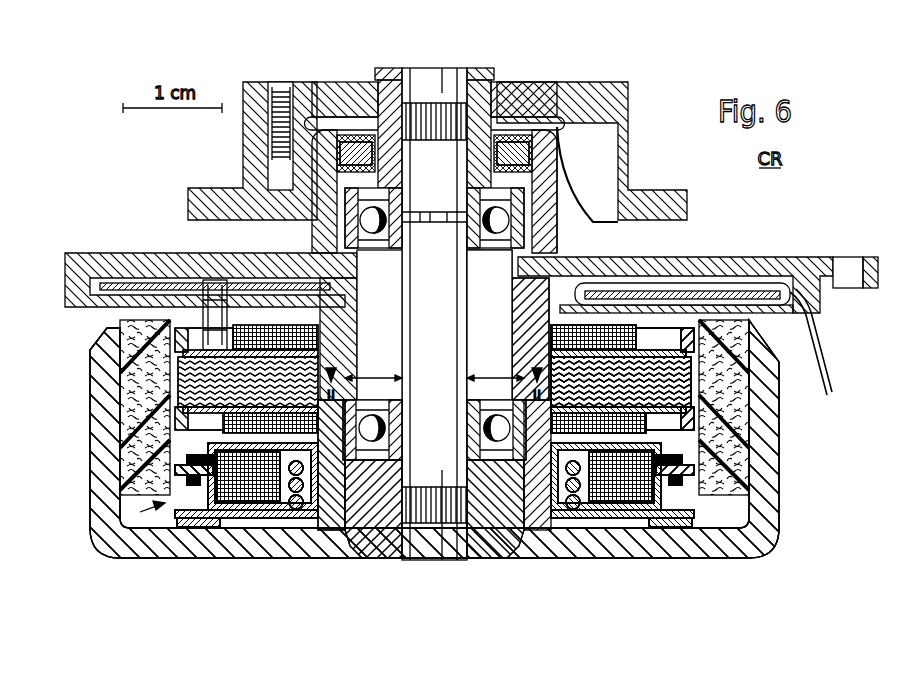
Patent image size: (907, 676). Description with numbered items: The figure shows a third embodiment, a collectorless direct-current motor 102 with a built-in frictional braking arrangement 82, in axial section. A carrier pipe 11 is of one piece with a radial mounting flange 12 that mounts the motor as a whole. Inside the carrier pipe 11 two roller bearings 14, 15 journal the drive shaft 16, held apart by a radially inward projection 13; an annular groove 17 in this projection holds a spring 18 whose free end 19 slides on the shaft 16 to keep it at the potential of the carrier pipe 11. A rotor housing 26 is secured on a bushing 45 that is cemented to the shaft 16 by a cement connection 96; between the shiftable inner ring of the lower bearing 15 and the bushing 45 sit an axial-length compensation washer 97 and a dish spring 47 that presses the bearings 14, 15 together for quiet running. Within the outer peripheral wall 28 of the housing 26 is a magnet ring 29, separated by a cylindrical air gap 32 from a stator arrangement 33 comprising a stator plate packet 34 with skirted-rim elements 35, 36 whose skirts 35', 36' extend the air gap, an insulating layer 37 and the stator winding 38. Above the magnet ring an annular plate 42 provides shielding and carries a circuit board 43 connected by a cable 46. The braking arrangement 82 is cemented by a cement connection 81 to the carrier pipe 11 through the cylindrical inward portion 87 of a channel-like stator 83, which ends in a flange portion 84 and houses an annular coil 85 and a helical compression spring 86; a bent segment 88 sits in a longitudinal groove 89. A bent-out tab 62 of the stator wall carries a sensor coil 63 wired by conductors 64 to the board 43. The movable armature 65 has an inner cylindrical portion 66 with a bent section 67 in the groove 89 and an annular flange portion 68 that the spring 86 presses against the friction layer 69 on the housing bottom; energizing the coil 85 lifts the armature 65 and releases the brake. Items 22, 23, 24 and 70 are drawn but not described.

The motor 102 is at (140, 172).
The carrier pipe 11 is at (533, 302).
The radial mounting flange 12 is at (813, 260).
The radially inward projection 13 is at (545, 262).
The upper roller bearing 14 is at (347, 232).
The lower roller bearing 15 is at (370, 403).
The drive shaft 16 is at (440, 308).
The annular groove 17 is at (520, 373).
The spring 18 is at (396, 375).
The free end 19 is at (472, 373).
The flange 22 is at (615, 107).
The rotor hub 23 is at (393, 167).
The seal ring 24 is at (537, 155).
The rotor housing 26 is at (590, 558).
The outer peripheral wall 28 is at (768, 437).
The magnet ring 29 is at (733, 465).
The air gap 32 is at (693, 448).
The stator arrangement 33 is at (177, 368).
The stator plate packet 34 is at (262, 357).
The skirted-rim element 35 is at (622, 330).
The skirt 35' is at (676, 379).
The skirted-rim element 36 is at (622, 393).
The skirt 36' is at (685, 379).
The layer of insulating material 37 is at (183, 413).
The stator winding 38 is at (330, 318).
The annular plate 42 is at (716, 290).
The circuit board 43 is at (752, 295).
The bushing 45 is at (488, 533).
The cable 46 is at (817, 347).
The dish spring 47 is at (378, 520).
The bent-out tab 62 is at (205, 472).
The sensor coil 63 is at (205, 497).
The conductors 64 is at (175, 387).
The movable armature 65 is at (700, 518).
The radially inner cylindrical portion 66 is at (293, 502).
The radially inwardly bent section 67 is at (540, 530).
The annular flange portion 68 is at (240, 525).
The annular friction layer 69 is at (197, 527).
The housing bottom 70 is at (143, 522).
The cement connection 81 is at (338, 543).
The frictional braking arrangement 82 is at (153, 505).
The channel-like stator 83 is at (207, 438).
The flange portion 84 is at (693, 497).
The annular coil 85 is at (635, 497).
The helical compression spring 86 is at (580, 510).
The cylindrical radially inward portion 87 is at (310, 508).
The radially inwardly bent segment 88 is at (510, 540).
The longitudinal groove 89 is at (533, 437).
The cement connection 96 is at (410, 545).
The axial-length compensation washer 97 is at (392, 527).